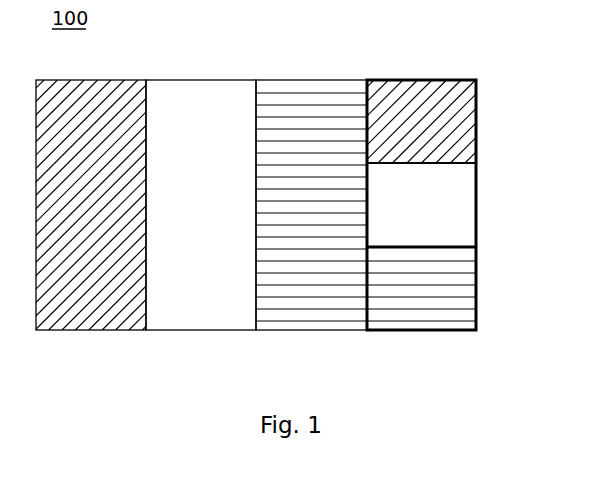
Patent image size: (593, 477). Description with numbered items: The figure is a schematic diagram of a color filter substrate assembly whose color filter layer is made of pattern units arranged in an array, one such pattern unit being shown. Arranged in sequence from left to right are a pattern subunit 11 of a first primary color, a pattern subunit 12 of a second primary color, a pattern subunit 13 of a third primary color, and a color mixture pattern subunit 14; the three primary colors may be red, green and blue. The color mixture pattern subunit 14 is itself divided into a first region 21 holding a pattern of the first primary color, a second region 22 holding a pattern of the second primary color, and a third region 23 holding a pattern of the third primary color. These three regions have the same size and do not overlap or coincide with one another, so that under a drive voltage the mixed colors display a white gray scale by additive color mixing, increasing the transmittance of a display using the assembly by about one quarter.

The pattern subunit of a first primary color 11 is at (63, 102).
The pattern subunit of a second primary color 12 is at (172, 108).
The pattern subunit of a third primary color 13 is at (277, 108).
The color mixture pattern subunit 14 is at (376, 230).
The first region 21 is at (460, 118).
The second region 22 is at (458, 197).
The third region 23 is at (458, 277).